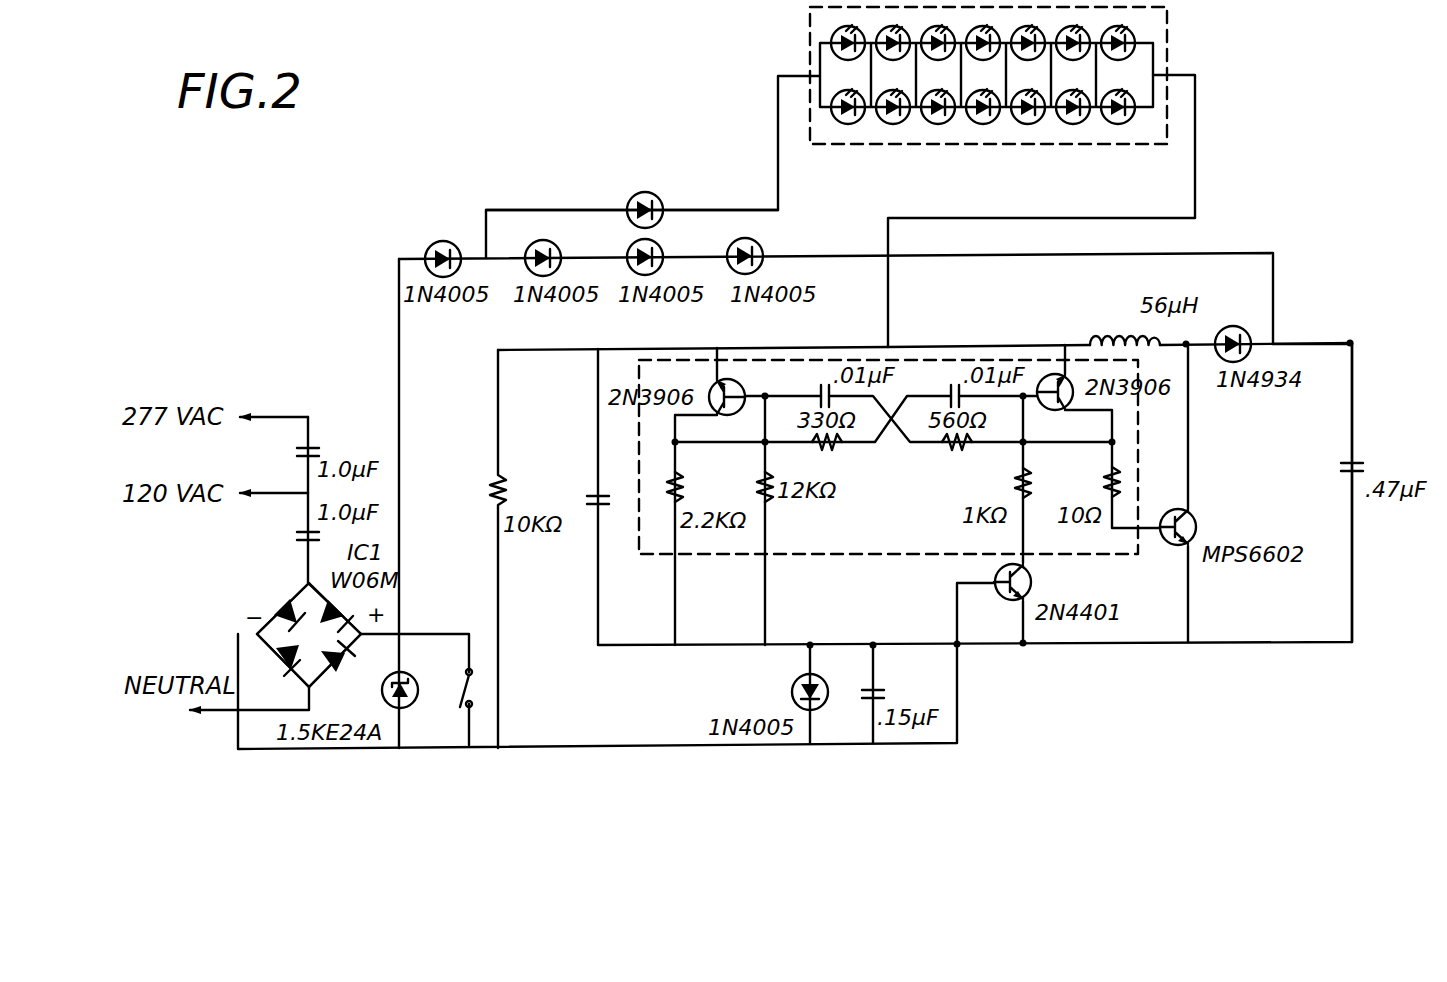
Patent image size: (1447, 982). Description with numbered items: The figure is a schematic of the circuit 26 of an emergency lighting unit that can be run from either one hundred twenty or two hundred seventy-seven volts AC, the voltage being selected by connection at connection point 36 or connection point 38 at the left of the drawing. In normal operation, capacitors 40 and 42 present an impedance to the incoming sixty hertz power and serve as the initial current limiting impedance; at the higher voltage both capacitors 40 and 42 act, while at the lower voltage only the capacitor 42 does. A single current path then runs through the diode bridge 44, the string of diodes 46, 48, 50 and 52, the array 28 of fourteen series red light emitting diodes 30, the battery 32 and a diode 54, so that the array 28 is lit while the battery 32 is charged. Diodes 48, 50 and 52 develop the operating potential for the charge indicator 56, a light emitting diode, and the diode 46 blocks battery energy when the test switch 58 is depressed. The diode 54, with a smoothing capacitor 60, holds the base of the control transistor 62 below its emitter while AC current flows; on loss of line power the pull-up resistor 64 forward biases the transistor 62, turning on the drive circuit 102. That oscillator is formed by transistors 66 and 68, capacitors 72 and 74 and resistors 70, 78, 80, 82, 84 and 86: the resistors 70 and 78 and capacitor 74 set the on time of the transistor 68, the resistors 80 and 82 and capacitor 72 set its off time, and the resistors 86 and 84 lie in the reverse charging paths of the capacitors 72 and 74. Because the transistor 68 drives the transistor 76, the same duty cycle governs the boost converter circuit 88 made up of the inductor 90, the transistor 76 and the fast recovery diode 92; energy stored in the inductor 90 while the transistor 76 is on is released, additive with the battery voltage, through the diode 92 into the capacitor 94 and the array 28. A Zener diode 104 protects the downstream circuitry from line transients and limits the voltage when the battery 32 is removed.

The circuit 26 is at (524, 112).
The array 28 is at (988, 104).
The light emitting diodes 30 is at (1120, 125).
The battery 32 is at (574, 490).
The connection point 36 is at (255, 392).
The connection point 38 is at (254, 477).
The capacitor 40 is at (320, 440).
The capacitor 42 is at (296, 523).
The diode bridge 44 is at (257, 587).
The diode 46 is at (443, 241).
The diode 48 is at (537, 241).
The diode 50 is at (660, 246).
The diode 52 is at (753, 245).
The diode 54 is at (791, 685).
The charge indicator 56 is at (645, 192).
The test switch 58 is at (485, 668).
The smoothing capacitor 60 is at (902, 684).
The transistor 62 is at (1043, 578).
The pull-up resistor 64 is at (478, 481).
The transistor 66 is at (731, 379).
The transistor 68 is at (1048, 373).
The resistor 70 is at (771, 506).
The capacitor 72 is at (955, 368).
The capacitor 74 is at (820, 372).
The transistor 76 is at (1203, 500).
The resistor 78 is at (952, 458).
The resistor 80 is at (834, 457).
The resistor 82 is at (1000, 485).
The resistor 84 is at (1122, 461).
The resistor 86 is at (656, 487).
The boost converter circuit 88 is at (1318, 312).
The inductor 90 is at (1110, 299).
The fast recovery diode 92 is at (1243, 326).
The capacitor 94 is at (1369, 452).
The drive circuit 102 is at (848, 560).
The diode 104 is at (416, 702).